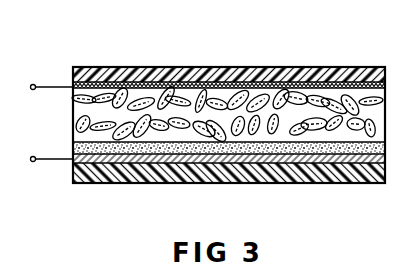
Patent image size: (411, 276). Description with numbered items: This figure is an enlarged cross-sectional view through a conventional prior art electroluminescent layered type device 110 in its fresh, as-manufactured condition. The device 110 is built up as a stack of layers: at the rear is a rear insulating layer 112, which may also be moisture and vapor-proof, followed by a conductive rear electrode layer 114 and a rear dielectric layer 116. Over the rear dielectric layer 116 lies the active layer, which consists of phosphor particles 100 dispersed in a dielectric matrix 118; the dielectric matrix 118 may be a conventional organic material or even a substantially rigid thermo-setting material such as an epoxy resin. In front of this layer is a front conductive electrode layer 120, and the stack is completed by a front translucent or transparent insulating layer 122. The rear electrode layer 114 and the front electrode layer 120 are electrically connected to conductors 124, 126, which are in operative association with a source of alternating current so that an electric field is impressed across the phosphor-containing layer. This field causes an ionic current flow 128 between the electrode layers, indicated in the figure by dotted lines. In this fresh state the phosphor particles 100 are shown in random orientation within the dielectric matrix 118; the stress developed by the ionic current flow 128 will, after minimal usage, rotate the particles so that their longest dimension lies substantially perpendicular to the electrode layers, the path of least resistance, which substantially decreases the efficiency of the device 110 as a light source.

The phosphor particles 100 is at (90, 132).
The electroluminescent layered type device 110 is at (63, 182).
The rear insulating layer 112 is at (233, 185).
The conductive rear electrode layer 114 is at (143, 185).
The rear dielectric layer 116 is at (270, 150).
The dielectric matrix 118 is at (76, 94).
The front conductive electrode layer 120 is at (268, 82).
The front translucent or transparent insulating layer 122 is at (205, 77).
The conductor 124 is at (50, 155).
The conductor 126 is at (53, 83).
The ionic current flow 128 is at (145, 87).